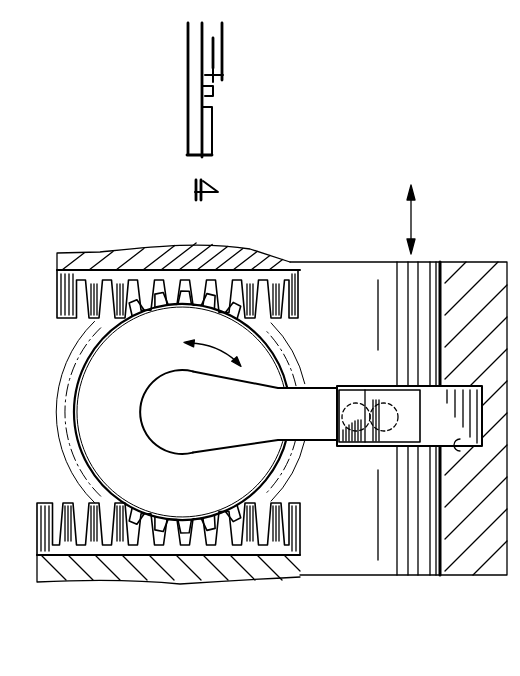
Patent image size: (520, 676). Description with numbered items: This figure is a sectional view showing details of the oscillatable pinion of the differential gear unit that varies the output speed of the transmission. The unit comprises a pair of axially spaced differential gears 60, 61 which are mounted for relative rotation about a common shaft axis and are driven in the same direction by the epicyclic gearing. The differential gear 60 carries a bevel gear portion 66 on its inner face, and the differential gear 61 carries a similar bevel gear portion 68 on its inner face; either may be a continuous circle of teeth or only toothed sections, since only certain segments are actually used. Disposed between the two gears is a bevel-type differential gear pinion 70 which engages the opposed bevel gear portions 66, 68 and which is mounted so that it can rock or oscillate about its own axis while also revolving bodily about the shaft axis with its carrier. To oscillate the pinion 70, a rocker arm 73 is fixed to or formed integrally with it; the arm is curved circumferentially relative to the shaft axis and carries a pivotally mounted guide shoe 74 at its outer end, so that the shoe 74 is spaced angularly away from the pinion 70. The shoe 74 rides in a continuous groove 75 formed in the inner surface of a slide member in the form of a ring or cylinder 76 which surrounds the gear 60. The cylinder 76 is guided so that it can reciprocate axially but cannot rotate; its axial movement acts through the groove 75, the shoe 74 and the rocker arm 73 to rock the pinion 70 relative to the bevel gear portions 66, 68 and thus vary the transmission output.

The differential gear 60 is at (162, 265).
The differential gear 61 is at (158, 548).
The bevel gear portion 66 is at (66, 306).
The bevel gear portion 68 is at (62, 502).
The differential gear pinion 70 is at (270, 455).
The rocker arm 73 is at (321, 403).
The guide shoe 74 is at (394, 397).
The groove 75 is at (457, 447).
The slide member (ring or cylinder) 76 is at (462, 572).